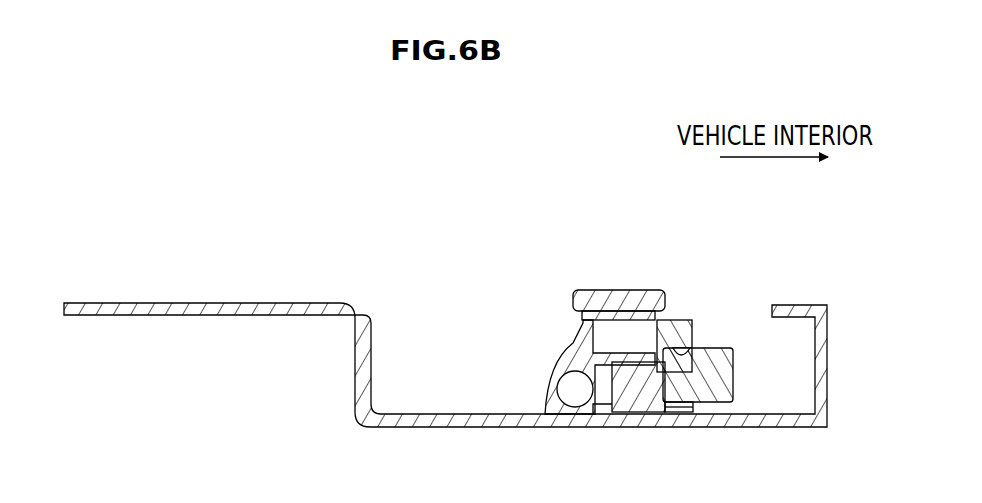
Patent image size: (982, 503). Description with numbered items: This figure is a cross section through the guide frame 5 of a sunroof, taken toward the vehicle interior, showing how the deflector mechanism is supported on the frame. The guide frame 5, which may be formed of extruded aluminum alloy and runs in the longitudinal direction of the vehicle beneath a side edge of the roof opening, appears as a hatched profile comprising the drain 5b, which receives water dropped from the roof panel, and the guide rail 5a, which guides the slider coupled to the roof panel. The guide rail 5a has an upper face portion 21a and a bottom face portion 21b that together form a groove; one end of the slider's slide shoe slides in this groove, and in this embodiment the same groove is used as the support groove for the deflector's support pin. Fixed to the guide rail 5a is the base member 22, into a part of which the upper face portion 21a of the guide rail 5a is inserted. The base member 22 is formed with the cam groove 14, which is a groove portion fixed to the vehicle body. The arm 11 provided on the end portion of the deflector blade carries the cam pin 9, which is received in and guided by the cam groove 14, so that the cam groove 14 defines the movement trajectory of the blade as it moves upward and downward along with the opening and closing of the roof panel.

The guide frame 5 is at (445, 352).
The guide rail 5a is at (780, 377).
The drain 5b is at (425, 362).
The cam pin 9 is at (673, 387).
The arm 11 is at (714, 390).
The cam groove 14 is at (690, 356).
The upper face portion 21a is at (591, 345).
The bottom face portion 21b is at (625, 420).
The base member 22 is at (638, 372).